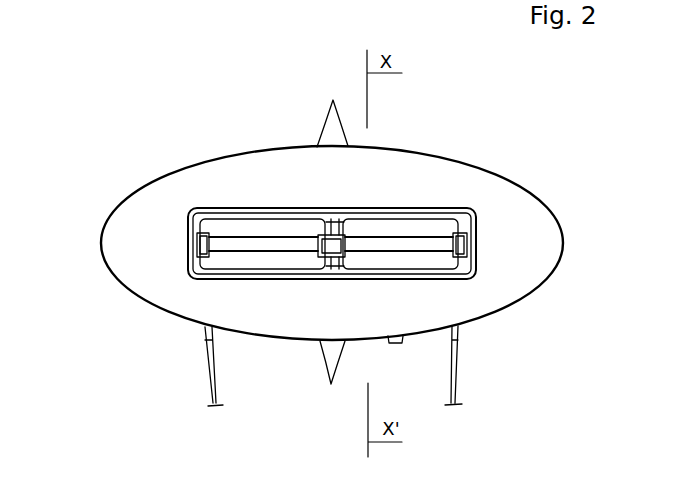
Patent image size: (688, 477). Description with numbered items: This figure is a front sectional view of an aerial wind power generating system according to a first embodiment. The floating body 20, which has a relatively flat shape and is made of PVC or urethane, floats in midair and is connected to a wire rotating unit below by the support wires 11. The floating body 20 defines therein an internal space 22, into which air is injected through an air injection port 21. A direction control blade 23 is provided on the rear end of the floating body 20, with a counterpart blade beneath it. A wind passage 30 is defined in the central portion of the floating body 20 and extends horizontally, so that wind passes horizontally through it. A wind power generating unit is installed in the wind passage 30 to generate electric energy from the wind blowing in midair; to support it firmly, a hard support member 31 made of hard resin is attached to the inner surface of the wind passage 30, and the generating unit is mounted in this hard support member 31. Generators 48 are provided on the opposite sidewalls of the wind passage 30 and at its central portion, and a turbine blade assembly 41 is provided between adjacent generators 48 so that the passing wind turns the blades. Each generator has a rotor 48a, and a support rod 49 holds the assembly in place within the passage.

The floating body 20 is at (139, 174).
The internal space 22 is at (197, 163).
The direction control blade 23 is at (346, 142).
The air injection port 21 is at (398, 344).
The support wires 11 is at (213, 383).
The wind passage 30 is at (378, 208).
The hard support member 31 is at (283, 212).
The turbine blade assembly 41 is at (409, 218).
The generators 48 is at (247, 206).
The rotor 48a is at (212, 161).
The support rod 49 is at (326, 260).